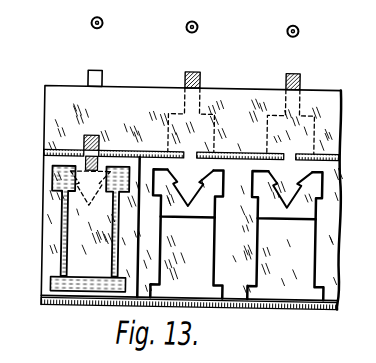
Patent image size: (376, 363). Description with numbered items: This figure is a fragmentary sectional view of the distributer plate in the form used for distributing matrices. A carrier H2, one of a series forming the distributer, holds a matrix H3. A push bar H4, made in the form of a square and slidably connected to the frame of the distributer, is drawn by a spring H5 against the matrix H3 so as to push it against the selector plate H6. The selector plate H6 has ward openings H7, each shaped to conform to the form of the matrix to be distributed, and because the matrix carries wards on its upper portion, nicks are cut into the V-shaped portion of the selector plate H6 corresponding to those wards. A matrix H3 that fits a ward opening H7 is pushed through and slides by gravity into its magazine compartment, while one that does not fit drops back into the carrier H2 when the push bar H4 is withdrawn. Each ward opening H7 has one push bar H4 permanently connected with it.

The carrier H2 is at (43, 247).
The matrix H3 is at (52, 287).
The push bar H4 is at (100, 77).
The spring H5 is at (100, 24).
The selector plate H6 is at (336, 130).
The ward opening H7 is at (295, 266).